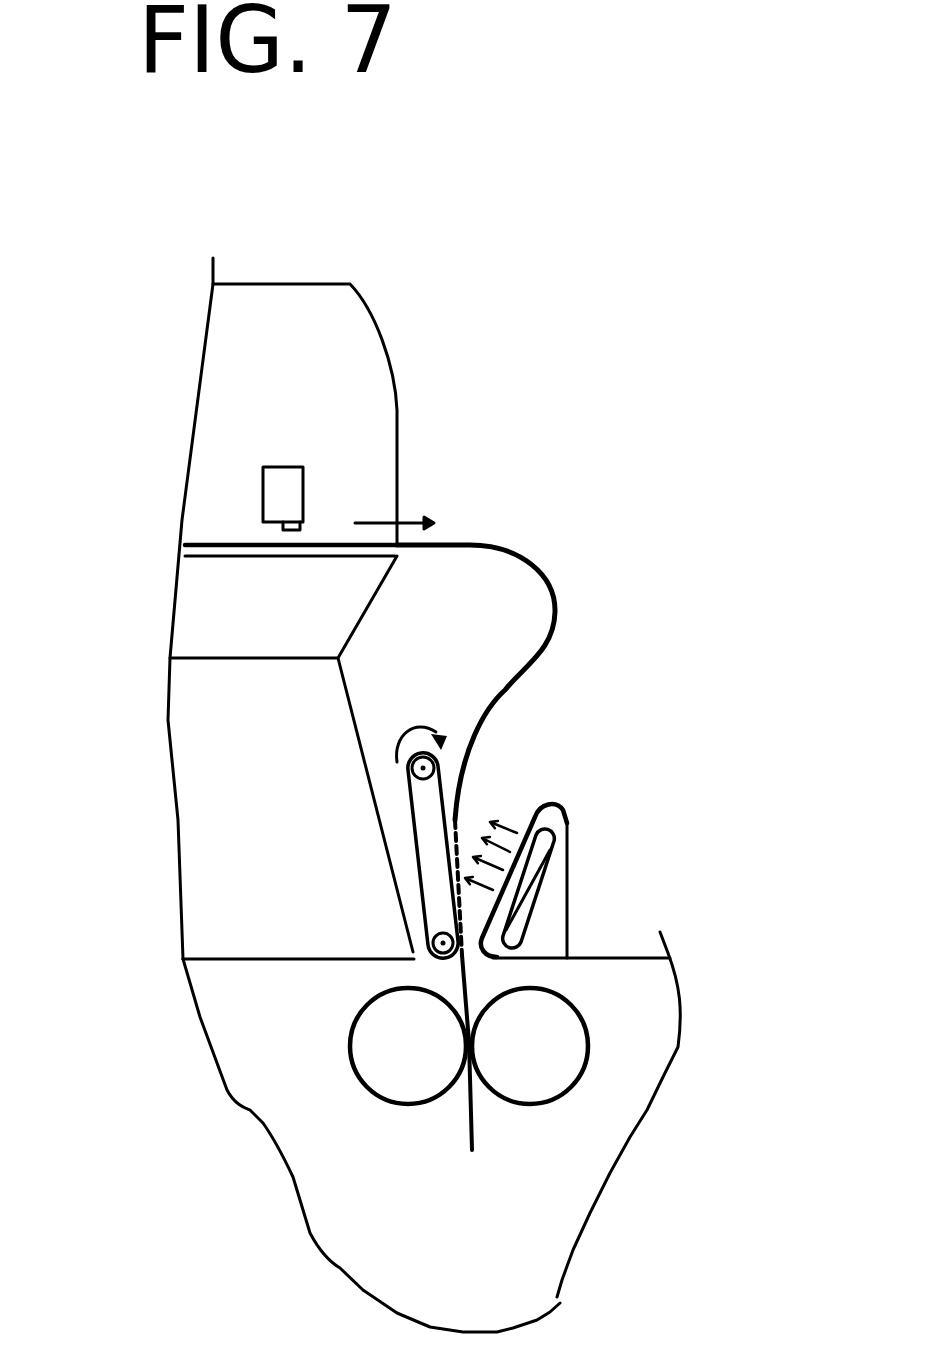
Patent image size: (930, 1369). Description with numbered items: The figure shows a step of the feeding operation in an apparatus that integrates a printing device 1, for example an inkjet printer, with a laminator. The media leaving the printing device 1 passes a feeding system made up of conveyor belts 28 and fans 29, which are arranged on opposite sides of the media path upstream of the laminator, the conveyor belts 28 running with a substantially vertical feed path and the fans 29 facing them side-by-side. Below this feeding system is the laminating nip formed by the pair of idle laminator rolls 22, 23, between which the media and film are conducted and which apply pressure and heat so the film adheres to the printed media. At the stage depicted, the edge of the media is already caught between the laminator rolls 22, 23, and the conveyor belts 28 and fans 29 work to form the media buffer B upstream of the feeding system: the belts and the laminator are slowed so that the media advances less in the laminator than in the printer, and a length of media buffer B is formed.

The printing device 1 is at (347, 435).
The media buffer B is at (557, 597).
The conveyor belts 28 is at (428, 852).
The fans 29 is at (567, 817).
The laminator roll 22 is at (380, 1048).
The laminator roll 23 is at (547, 1062).